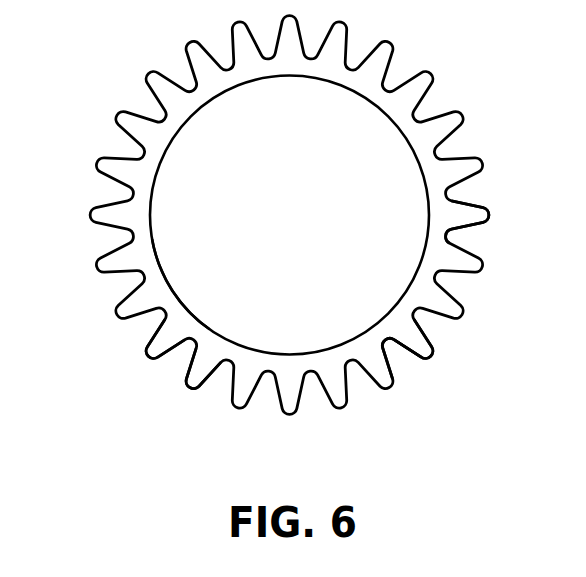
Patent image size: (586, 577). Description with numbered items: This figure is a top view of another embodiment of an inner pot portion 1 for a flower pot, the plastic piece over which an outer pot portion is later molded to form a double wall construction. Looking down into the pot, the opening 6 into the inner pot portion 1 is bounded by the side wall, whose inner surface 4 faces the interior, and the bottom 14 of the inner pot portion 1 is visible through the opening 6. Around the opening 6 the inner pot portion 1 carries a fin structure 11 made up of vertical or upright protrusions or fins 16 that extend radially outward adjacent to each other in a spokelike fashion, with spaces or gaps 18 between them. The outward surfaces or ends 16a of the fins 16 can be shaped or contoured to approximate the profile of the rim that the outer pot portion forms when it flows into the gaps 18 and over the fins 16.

The inner pot portion 1 is at (442, 63).
The inner surface 4 is at (170, 290).
The opening 6 is at (402, 222).
The fin structure 11 is at (142, 365).
The bottom 14 is at (302, 222).
The fins 16 is at (416, 345).
The outward surfaces or ends 16a is at (187, 392).
The spaces or gaps 18 is at (397, 343).